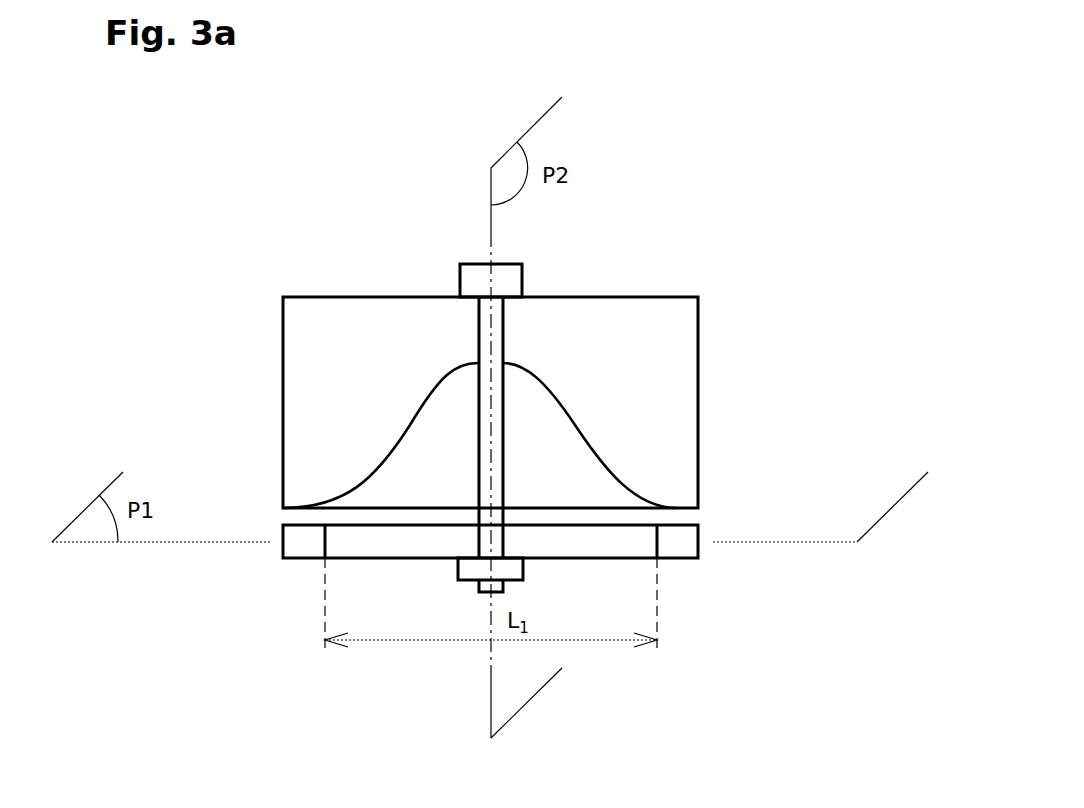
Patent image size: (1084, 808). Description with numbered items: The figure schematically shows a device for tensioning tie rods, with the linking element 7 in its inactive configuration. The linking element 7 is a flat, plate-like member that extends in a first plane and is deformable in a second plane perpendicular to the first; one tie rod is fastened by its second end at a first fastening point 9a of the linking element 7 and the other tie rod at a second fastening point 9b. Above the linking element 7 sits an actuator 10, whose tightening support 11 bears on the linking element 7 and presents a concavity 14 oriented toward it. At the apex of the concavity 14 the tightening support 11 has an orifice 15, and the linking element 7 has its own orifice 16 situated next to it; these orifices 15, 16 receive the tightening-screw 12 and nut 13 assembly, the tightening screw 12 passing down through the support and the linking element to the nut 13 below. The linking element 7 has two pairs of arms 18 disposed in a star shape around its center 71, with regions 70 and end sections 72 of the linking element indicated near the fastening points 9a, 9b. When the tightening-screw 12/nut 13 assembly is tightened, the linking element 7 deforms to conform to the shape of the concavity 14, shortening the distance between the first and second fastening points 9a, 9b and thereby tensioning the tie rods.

The linking element 7 is at (390, 538).
The first fastening point 9a is at (322, 545).
The second fastening point 9b is at (660, 542).
The actuator 10 is at (560, 272).
The tightening support 11 is at (662, 352).
The tightening screw 12 is at (475, 263).
The nut 13 is at (513, 568).
The concavity 14 is at (540, 408).
The orifice 15 is at (478, 333).
The orifice 16 is at (485, 538).
The arms 18 is at (360, 538).
The plate portions 70 is at (425, 538).
The center 71 is at (513, 538).
The plate end sections 72 is at (297, 547).